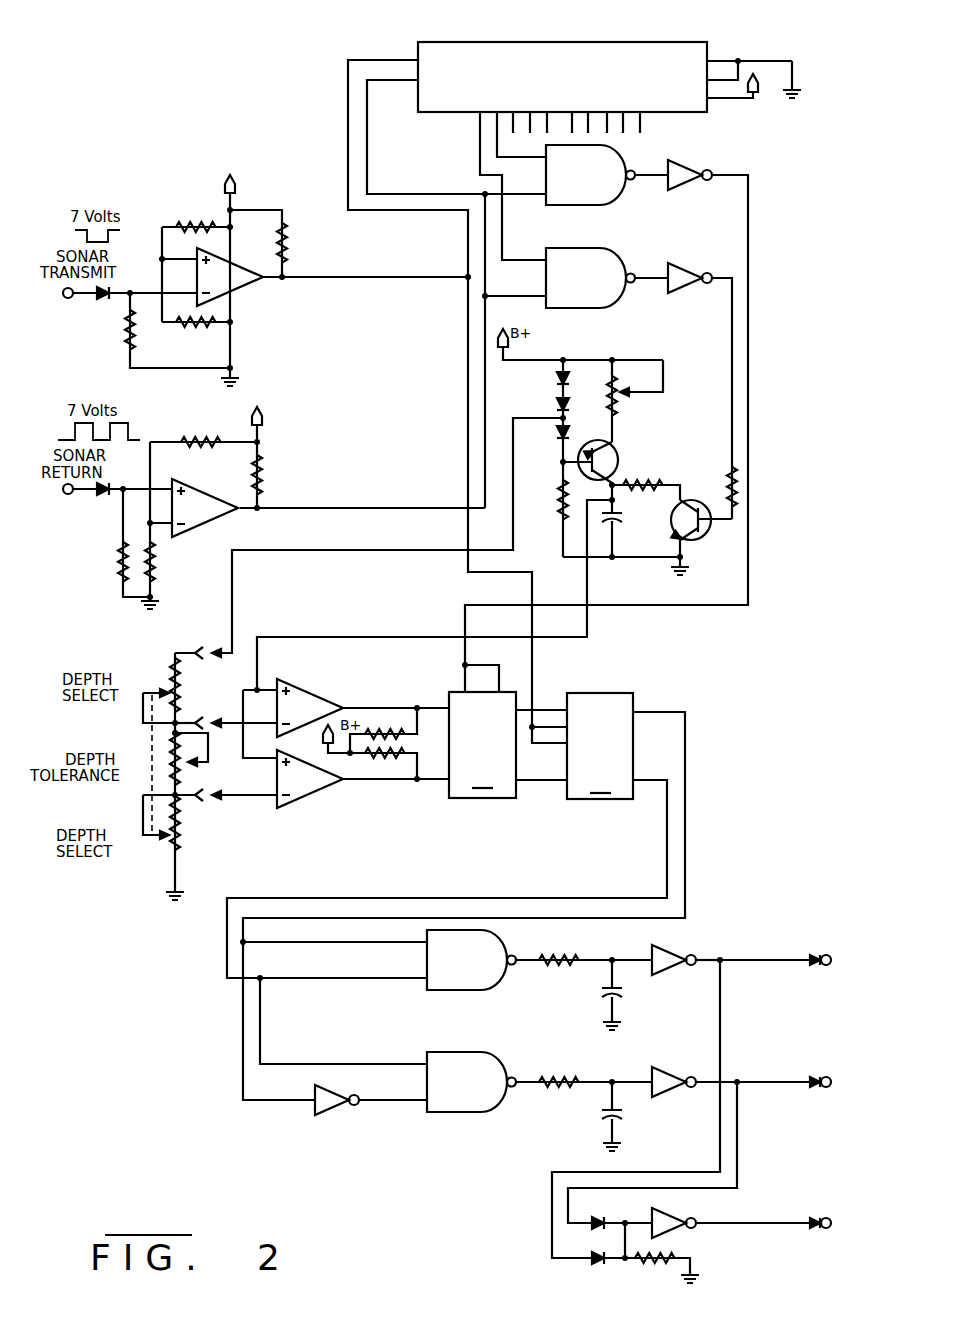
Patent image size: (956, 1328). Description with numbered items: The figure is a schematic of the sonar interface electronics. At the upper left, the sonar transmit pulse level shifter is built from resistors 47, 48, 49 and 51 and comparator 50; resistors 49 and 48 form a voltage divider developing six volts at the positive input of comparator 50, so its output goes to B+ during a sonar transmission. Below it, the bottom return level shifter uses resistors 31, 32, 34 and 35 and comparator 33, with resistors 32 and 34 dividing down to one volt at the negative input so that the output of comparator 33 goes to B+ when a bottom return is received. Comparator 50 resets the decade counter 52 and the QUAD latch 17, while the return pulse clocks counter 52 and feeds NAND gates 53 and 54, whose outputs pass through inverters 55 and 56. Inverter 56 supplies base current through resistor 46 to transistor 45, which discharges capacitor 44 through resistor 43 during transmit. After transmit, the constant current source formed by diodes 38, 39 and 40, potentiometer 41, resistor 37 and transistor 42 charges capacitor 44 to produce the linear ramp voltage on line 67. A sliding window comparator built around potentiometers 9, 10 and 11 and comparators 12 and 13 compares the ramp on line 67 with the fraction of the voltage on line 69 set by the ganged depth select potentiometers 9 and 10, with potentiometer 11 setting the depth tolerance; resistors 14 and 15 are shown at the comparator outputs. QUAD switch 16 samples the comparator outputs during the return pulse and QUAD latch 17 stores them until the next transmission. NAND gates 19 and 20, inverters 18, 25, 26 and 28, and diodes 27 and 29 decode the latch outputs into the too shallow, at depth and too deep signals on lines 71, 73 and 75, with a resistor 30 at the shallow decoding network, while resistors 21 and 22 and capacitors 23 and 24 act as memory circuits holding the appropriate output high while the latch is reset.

The potentiometer 9 is at (172, 682).
The potentiometer 10 is at (186, 832).
The potentiometer 11 is at (152, 745).
The comparator 12 is at (318, 691).
The comparator 13 is at (312, 793).
The resistor 14 is at (380, 728).
The resistor 15 is at (372, 760).
The QUAD switch 16 is at (482, 745).
The QUAD latch 17 is at (600, 746).
The inverter 18 is at (310, 1105).
The NAND gate 19 is at (476, 976).
The NAND gate 20 is at (476, 1098).
The resistor 21 is at (560, 1090).
The resistor 22 is at (560, 955).
The capacitor 23 is at (624, 996).
The capacitor 24 is at (624, 1118).
The inverter 25 is at (665, 1072).
The inverter 26 is at (676, 955).
The diode 27 is at (592, 1215).
The inverter 28 is at (680, 1212).
The diode 29 is at (592, 1264).
The resistor 30 is at (655, 1263).
The resistor 31 is at (115, 556).
The resistor 32 is at (157, 561).
The comparator 33 is at (222, 482).
The resistor 34 is at (203, 439).
The resistor 35 is at (264, 465).
The resistor 37 is at (557, 500).
The diode 38 is at (557, 379).
The diode 39 is at (557, 405).
The diode 40 is at (557, 432).
The potentiometer 41 is at (618, 404).
The transistor 42 is at (618, 466).
The resistor 43 is at (656, 478).
The capacitor 44 is at (622, 521).
The transistor 45 is at (694, 540).
The resistor 46 is at (743, 478).
The resistor 47 is at (123, 317).
The resistor 48 is at (201, 329).
The resistor 49 is at (195, 226).
The comparator 50 is at (244, 284).
The resistor 51 is at (287, 250).
The decade counter 52 is at (470, 42).
The NAND gate 53 is at (596, 190).
The NAND gate 54 is at (596, 293).
The inverter 55 is at (688, 168).
The inverter 56 is at (690, 268).
The line 67 is at (352, 637).
The line 69 is at (286, 552).
The line 71 is at (748, 1225).
The line 73 is at (762, 1083).
The line 75 is at (745, 963).